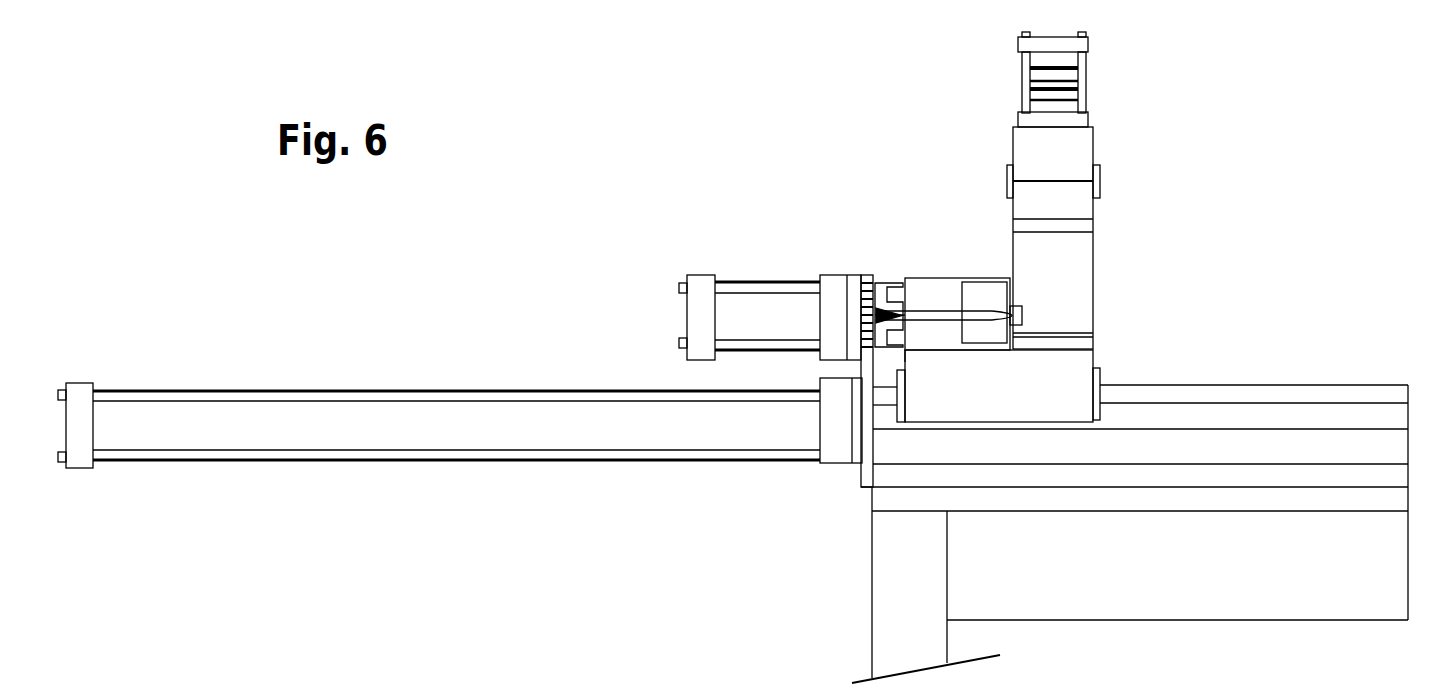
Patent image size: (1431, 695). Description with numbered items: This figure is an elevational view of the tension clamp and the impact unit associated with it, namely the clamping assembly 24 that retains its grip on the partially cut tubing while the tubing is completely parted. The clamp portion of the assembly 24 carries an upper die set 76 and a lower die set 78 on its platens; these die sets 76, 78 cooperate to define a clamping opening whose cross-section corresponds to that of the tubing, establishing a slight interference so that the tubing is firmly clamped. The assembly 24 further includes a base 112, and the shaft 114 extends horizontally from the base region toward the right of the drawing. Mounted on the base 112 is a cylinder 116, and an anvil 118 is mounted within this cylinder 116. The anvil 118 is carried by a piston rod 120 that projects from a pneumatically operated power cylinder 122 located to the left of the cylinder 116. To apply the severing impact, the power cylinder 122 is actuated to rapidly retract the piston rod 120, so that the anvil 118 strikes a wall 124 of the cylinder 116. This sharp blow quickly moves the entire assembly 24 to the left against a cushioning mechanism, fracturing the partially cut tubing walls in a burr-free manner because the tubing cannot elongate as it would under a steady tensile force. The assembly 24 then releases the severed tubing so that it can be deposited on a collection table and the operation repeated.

The clamping assembly 24 is at (956, 116).
The upper die set 76 is at (1100, 170).
The lower die set 78 is at (1100, 192).
The base 112 is at (997, 407).
The shaft 114 is at (1130, 392).
The cylinder 116 is at (966, 277).
The anvil 118 is at (992, 297).
The piston rod 120 is at (920, 276).
The power cylinder 122 is at (753, 303).
The wall 124 is at (920, 312).